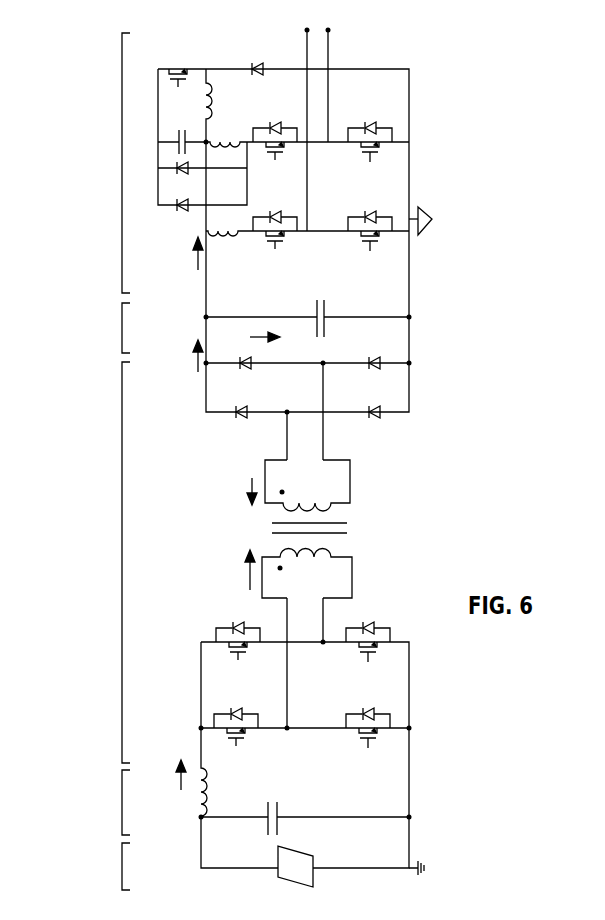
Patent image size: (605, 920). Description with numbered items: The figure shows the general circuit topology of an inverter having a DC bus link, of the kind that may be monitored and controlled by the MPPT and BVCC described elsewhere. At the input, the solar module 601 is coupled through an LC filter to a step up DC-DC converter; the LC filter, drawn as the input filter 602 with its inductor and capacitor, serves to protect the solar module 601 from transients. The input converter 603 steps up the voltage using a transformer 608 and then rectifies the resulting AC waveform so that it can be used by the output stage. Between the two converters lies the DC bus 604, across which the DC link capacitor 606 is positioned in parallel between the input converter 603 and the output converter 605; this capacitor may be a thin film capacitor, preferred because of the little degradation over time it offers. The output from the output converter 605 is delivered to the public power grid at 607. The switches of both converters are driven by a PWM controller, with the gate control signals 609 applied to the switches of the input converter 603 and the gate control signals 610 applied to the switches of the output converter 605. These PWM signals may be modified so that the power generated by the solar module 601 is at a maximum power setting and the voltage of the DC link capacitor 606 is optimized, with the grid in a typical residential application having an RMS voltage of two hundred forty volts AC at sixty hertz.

The solar module 601 is at (222, 853).
The input filter 602 is at (216, 781).
The input converter 603 is at (230, 553).
The bus 604 is at (216, 321).
The output converter 605 is at (227, 175).
The DC link capacitor 606 is at (316, 303).
The public power grid connection 607 is at (335, 130).
The transformer 608 is at (372, 533).
The input converter gate control signals 609 is at (369, 661).
The output converter gate control signals 610 is at (371, 161).